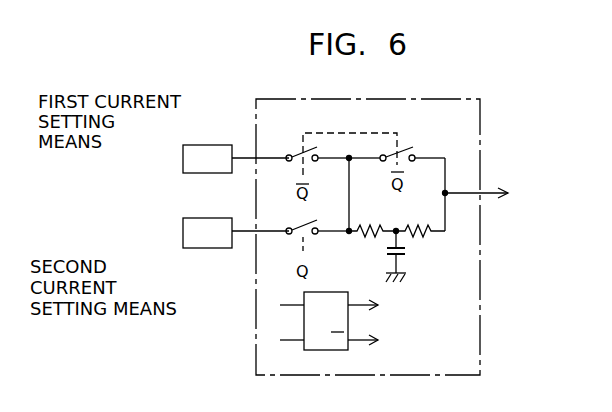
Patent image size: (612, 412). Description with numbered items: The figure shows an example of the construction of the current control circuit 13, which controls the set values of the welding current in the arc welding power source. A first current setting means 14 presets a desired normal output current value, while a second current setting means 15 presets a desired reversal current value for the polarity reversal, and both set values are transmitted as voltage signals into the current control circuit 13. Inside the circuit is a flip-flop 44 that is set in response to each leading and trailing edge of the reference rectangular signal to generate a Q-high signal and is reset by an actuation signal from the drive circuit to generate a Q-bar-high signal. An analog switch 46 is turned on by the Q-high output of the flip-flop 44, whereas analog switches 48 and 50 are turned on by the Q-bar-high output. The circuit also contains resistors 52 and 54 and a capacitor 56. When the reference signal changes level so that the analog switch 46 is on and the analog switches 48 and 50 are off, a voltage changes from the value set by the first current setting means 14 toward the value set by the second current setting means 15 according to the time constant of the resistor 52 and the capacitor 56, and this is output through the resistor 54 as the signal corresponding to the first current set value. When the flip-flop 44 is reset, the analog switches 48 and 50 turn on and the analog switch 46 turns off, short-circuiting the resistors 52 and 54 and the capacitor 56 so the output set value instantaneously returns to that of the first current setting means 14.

The current control circuit 13 is at (256, 345).
The first current setting means 14 is at (207, 145).
The second current setting means 15 is at (207, 248).
The flip-flop 44 is at (345, 292).
The analog switch 46 is at (300, 225).
The analog switch 48 is at (300, 152).
The analog switch 50 is at (400, 150).
The resistor 52 is at (368, 225).
The resistor 54 is at (420, 227).
The capacitor 56 is at (406, 252).